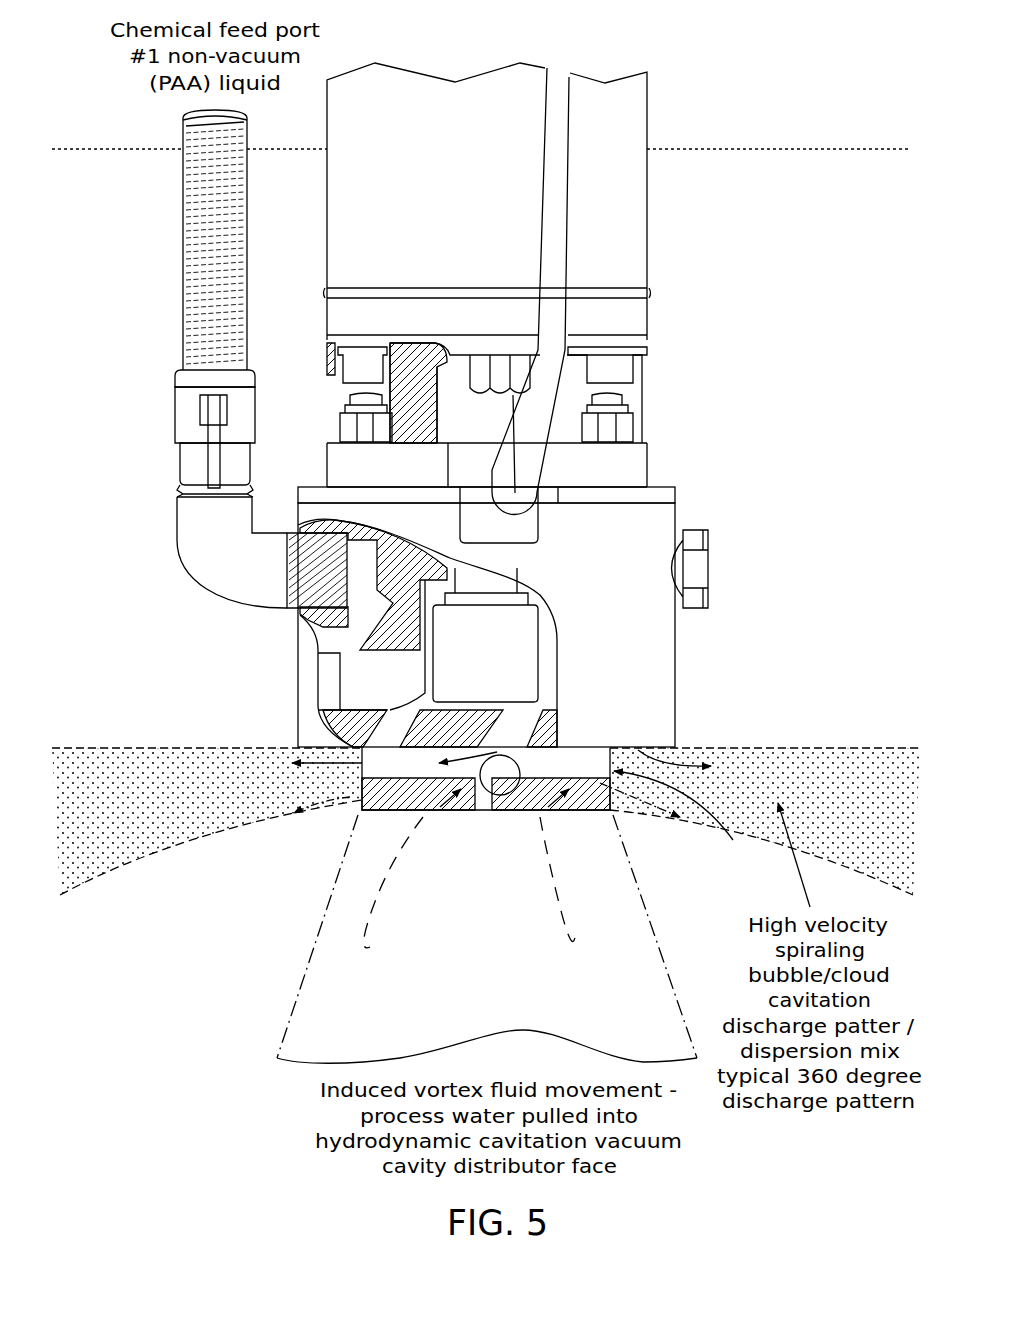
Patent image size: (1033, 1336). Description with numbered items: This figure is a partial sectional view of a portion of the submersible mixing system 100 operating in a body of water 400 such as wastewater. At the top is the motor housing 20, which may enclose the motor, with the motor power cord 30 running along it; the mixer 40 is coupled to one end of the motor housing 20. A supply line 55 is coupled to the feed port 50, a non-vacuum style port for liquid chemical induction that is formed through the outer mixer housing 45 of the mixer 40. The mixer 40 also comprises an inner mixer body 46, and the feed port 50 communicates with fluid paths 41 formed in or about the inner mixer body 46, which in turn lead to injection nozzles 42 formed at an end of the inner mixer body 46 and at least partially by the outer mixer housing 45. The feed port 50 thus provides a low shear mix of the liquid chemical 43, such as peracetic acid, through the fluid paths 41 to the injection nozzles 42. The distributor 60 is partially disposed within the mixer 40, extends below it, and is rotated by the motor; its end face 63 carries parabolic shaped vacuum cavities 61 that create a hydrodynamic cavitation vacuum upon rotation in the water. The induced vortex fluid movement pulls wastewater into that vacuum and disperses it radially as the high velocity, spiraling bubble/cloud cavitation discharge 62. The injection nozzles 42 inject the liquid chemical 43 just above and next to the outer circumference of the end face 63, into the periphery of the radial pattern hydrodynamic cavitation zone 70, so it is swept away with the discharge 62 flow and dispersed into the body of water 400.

The submersible mixing system 100 is at (536, 289).
The body of water 400 is at (818, 185).
The motor housing 20 is at (648, 240).
The motor power cord 30 is at (555, 200).
The supply line 55 is at (182, 243).
The feed port 50 is at (287, 570).
The mixer 40 is at (504, 692).
The outer mixer housing 45 is at (677, 668).
The inner mixer body 46 is at (387, 637).
The fluid paths 41 is at (330, 682).
The injection nozzles 42 is at (388, 732).
The liquid chemical 43 is at (322, 762).
The radial pattern hydrodynamic cavitation zone 70 is at (160, 803).
The distributor 60 is at (680, 811).
The parabolic shaped vacuum cavities 61 is at (590, 805).
The bubble/cloud cavitation discharge 62 is at (333, 797).
The end face 63 is at (465, 816).